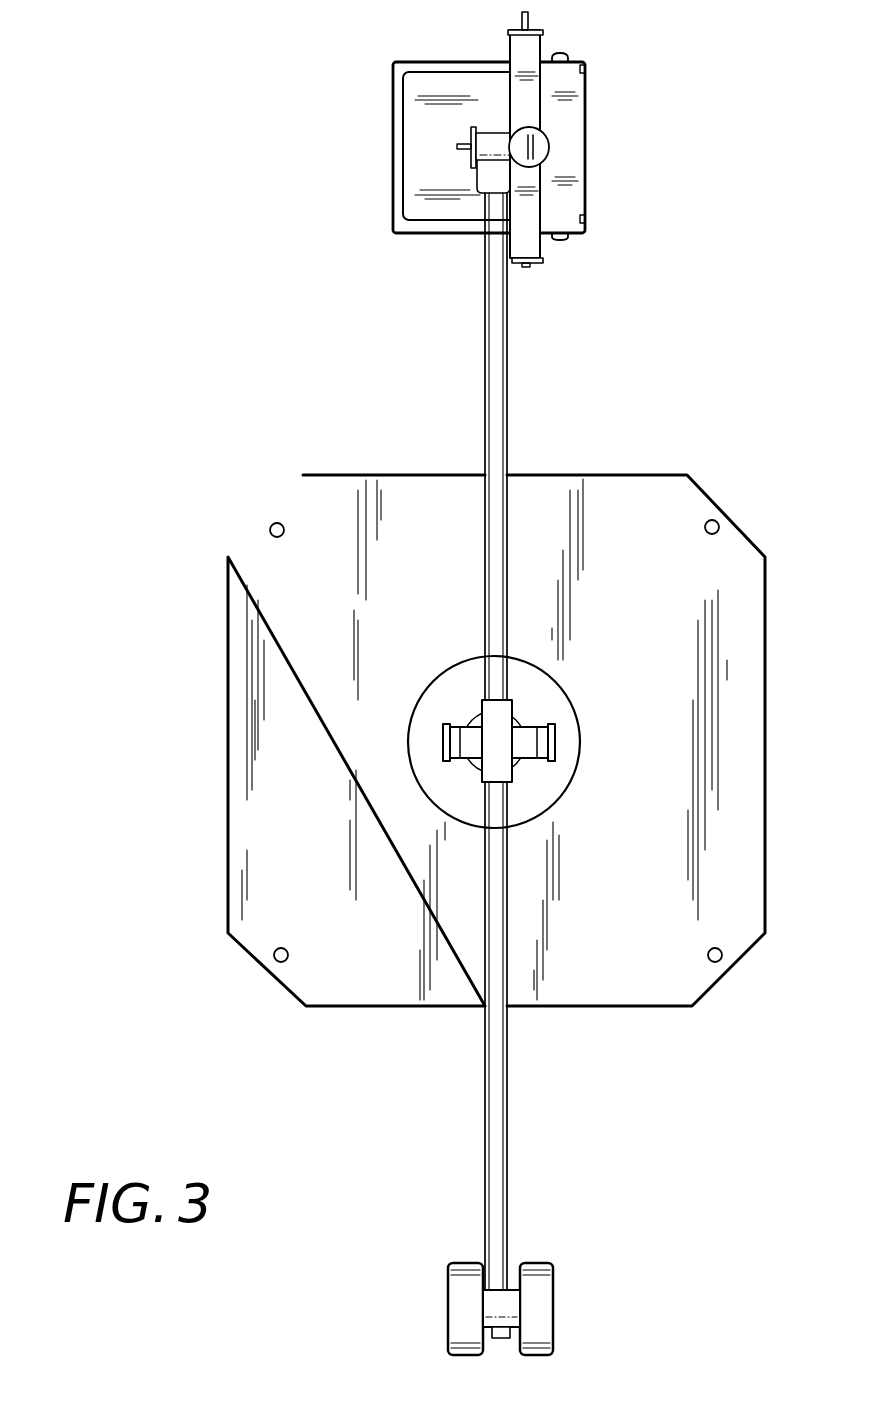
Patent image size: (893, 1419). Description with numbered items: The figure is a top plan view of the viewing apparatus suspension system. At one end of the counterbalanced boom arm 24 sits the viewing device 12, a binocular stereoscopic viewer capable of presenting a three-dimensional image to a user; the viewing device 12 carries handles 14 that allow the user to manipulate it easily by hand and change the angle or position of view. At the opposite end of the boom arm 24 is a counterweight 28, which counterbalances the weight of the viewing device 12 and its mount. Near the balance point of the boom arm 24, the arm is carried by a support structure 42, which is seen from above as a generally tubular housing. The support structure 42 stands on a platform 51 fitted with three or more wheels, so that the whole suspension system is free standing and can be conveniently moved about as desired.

The viewing device 12 is at (412, 153).
The handles 14 is at (566, 240).
The counterbalanced boom arm 24 is at (497, 382).
The counterweight 28 is at (552, 1285).
The support structure 42 is at (443, 668).
The platform 51 is at (335, 490).